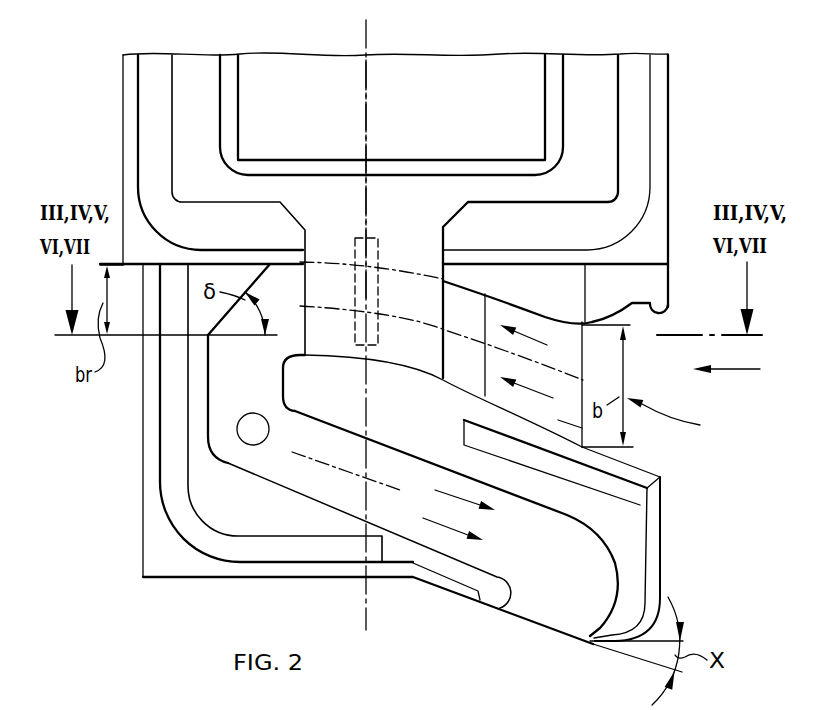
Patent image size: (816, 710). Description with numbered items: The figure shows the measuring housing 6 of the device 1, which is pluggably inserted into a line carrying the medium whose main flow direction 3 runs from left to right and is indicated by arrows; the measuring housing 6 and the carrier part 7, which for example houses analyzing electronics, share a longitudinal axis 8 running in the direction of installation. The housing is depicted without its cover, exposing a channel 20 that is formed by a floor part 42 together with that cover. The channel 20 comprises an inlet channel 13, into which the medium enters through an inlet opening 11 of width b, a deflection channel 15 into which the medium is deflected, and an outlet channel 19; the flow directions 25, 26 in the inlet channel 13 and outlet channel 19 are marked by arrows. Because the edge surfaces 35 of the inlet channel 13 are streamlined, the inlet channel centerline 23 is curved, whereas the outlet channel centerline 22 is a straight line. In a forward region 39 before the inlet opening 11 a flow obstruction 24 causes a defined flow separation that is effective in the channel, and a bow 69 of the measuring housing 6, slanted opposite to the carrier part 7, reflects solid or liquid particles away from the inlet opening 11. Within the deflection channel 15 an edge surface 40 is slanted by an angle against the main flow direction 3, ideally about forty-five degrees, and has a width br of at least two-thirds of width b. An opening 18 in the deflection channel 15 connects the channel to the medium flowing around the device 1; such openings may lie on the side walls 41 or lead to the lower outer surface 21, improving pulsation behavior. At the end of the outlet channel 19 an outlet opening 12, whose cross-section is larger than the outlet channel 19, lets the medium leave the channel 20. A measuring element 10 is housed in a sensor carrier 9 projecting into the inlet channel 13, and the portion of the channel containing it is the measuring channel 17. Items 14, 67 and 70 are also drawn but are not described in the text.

The device 1 is at (705, 96).
The main flow direction 3 is at (742, 370).
The measuring housing 6 is at (120, 500).
The carrier part 7 is at (669, 140).
The longitudinal axis 8 is at (368, 118).
The sensor carrier 9 is at (330, 280).
The measuring element 10 is at (378, 239).
The inlet opening 11 is at (583, 352).
The outlet opening 12 is at (552, 610).
The inlet channel 13 is at (560, 370).
The inlet opening wall 14 is at (302, 283).
The deflection channel 15 is at (222, 357).
The measuring channel 17 is at (410, 302).
The opening 18 is at (253, 434).
The outlet channel 19 is at (332, 487).
The channel 20 is at (558, 420).
The lower outer surface 21 is at (452, 592).
The outlet channel centerline 22 is at (373, 482).
The inlet channel centerline 23 is at (401, 268).
The flow obstruction 24 is at (671, 307).
The flow direction 25 is at (547, 320).
The flow direction 26 is at (430, 522).
The edge surfaces 35 is at (505, 310).
The forward region 39 is at (676, 417).
The edge surface 40 is at (262, 281).
The side walls 41 is at (237, 403).
The floor part 42 is at (197, 568).
The wall edge 67 is at (486, 358).
The bow 69 is at (660, 538).
The separating wall 70 is at (662, 478).